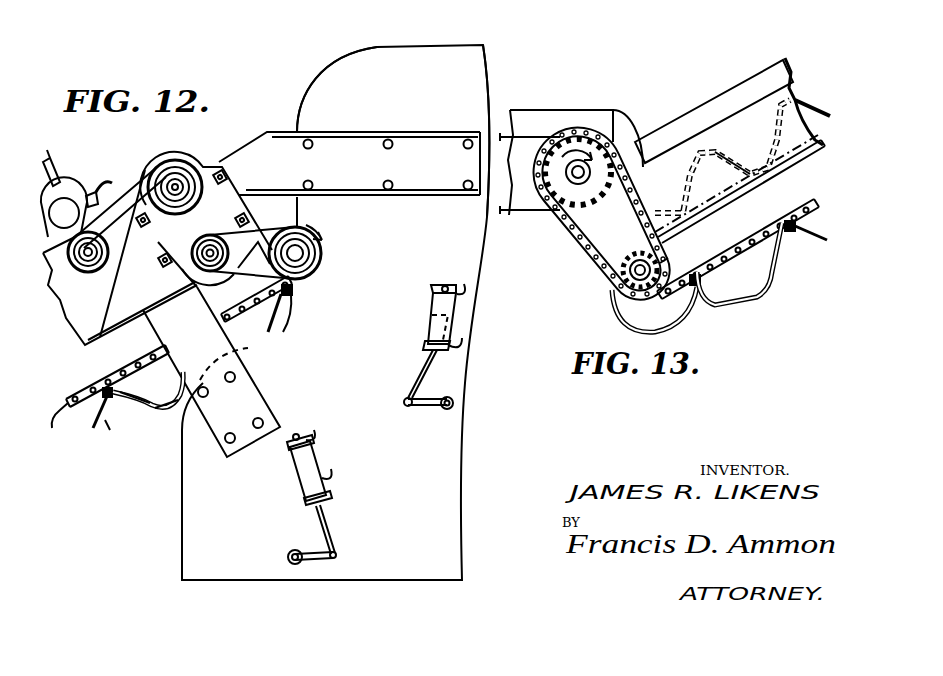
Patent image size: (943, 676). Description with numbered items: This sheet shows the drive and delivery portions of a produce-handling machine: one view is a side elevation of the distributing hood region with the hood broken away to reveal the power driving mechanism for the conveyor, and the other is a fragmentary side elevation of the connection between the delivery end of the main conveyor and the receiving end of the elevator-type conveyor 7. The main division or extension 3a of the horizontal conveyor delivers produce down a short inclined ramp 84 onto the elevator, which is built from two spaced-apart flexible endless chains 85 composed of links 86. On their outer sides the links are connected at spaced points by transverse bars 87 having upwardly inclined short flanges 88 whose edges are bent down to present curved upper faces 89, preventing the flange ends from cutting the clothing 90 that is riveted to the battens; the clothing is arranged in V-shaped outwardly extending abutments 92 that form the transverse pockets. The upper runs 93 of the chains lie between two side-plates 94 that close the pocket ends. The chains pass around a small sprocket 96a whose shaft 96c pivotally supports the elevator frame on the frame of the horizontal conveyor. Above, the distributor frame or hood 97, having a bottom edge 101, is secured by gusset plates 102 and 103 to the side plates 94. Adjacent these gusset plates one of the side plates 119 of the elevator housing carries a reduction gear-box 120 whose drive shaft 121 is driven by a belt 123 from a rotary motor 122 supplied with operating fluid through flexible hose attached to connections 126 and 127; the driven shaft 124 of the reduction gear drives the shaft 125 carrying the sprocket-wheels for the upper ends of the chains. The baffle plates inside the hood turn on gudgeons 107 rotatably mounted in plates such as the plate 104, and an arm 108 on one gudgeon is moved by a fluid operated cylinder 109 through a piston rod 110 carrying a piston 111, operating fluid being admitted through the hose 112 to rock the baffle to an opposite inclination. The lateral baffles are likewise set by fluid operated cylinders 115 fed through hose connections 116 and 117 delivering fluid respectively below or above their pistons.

In FIG. 13, the main division or extension of the conveyor means 3a is at (503, 212).
In FIG. 12, the elevator-type conveyor 7 is at (110, 430).
In FIG. 13, the elevator-type conveyor 7 is at (791, 254).
In FIG. 13, the inclined ramp 84 is at (631, 124).
In FIG. 12, the flexible endless belts or chains 85 is at (60, 425).
In FIG. 13, the flexible endless belts or chains 85 is at (756, 228).
In FIG. 12, the links 86 is at (140, 367).
In FIG. 13, the links 86 is at (722, 255).
In FIG. 12, the transverse bars 87 is at (104, 388).
In FIG. 13, the transverse bars 87 is at (792, 222).
In FIG. 12, the upwardly inclined short flanges 88 is at (114, 405).
In FIG. 12, the curved upper faces 89 is at (130, 396).
In FIG. 12, the clothing 90 is at (158, 408).
In FIG. 13, the clothing 90 is at (727, 160).
In FIG. 12, the outwardly extending abutments 92 is at (138, 412).
In FIG. 13, the outwardly extending abutments 92 is at (730, 295).
In FIG. 13, the upper runs of the chains 93 is at (793, 155).
In FIG. 12, the side-plates 94 is at (82, 326).
In FIG. 13, the side-plates 94 is at (768, 108).
In FIG. 13, the sprocket 96a is at (622, 270).
In FIG. 13, the shaft of sprocket 96a 96c is at (668, 258).
In FIG. 12, the distributor frame or hood 97 is at (300, 96).
In FIG. 12, the bottom edge of the hood 101 is at (400, 582).
In FIG. 12, the gusset plate 102 is at (349, 163).
In FIG. 12, the gusset plate 103 is at (211, 372).
In FIG. 12, the plate 104 is at (468, 84).
In FIG. 12, the trunnions or gudgeons 107 is at (452, 412).
In FIG. 12, the lever or arm 108 is at (436, 398).
In FIG. 12, the fluid operated cylinder 109 is at (432, 312).
In FIG. 12, the piston rod 110 is at (420, 368).
In FIG. 12, the piston 111 is at (428, 332).
In FIG. 12, the hose 112 is at (463, 346).
In FIG. 12, the fluid operated cylinders 115 is at (312, 463).
In FIG. 12, the hose connection 116 is at (332, 484).
In FIG. 12, the hose connection 117 is at (318, 448).
In FIG. 12, the side plate of the elevator housing 119 is at (133, 266).
In FIG. 12, the gear-box 120 is at (186, 244).
In FIG. 12, the drive shaft 121 is at (176, 186).
In FIG. 12, the motor 122 is at (69, 196).
In FIG. 12, the belt 123 is at (130, 182).
In FIG. 12, the driven shaft 124 is at (193, 270).
In FIG. 12, the shaft 125 is at (303, 257).
In FIG. 12, the connection 126 is at (55, 166).
In FIG. 12, the connection 127 is at (100, 190).